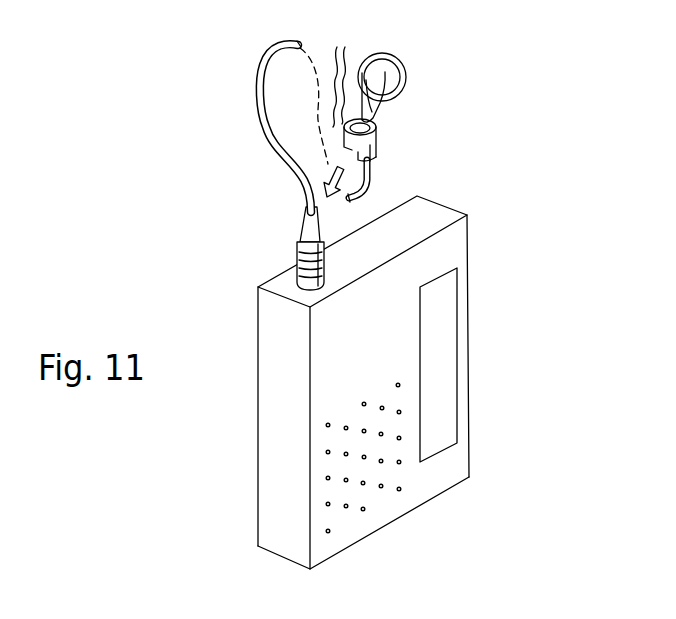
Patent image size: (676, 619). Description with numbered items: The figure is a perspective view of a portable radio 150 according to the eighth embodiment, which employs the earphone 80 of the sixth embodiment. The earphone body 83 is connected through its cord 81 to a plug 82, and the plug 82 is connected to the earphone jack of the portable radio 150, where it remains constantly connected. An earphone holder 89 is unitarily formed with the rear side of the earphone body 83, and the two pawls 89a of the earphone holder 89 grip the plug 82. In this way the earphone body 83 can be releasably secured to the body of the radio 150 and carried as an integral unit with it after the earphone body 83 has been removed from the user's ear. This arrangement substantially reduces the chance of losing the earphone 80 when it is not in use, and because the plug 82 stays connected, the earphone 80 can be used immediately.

The earphone 80 is at (430, 117).
The earphone cord 81 is at (288, 162).
The plug 82 is at (302, 233).
The earphone body 83 is at (402, 65).
The earphone holder 89 is at (380, 153).
The pawls 89a is at (340, 69).
The portable radio 150 is at (493, 263).